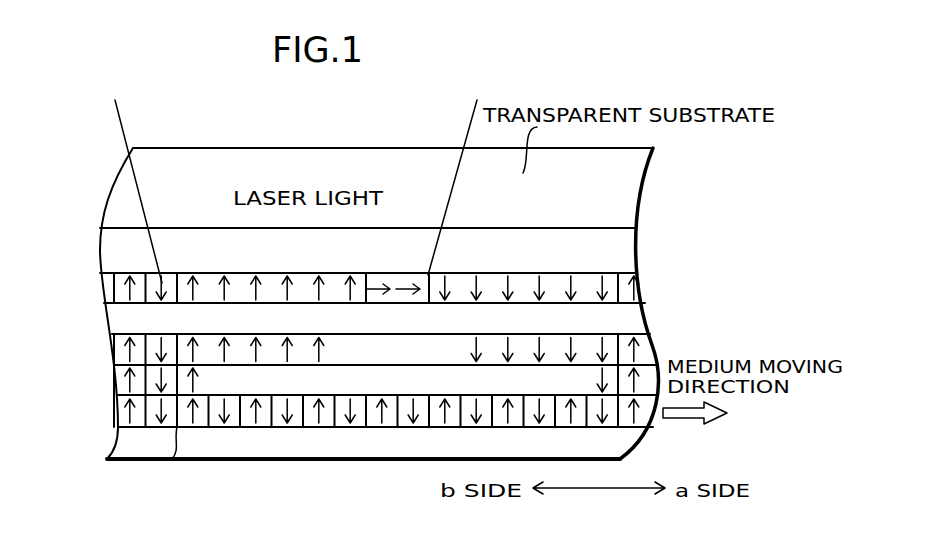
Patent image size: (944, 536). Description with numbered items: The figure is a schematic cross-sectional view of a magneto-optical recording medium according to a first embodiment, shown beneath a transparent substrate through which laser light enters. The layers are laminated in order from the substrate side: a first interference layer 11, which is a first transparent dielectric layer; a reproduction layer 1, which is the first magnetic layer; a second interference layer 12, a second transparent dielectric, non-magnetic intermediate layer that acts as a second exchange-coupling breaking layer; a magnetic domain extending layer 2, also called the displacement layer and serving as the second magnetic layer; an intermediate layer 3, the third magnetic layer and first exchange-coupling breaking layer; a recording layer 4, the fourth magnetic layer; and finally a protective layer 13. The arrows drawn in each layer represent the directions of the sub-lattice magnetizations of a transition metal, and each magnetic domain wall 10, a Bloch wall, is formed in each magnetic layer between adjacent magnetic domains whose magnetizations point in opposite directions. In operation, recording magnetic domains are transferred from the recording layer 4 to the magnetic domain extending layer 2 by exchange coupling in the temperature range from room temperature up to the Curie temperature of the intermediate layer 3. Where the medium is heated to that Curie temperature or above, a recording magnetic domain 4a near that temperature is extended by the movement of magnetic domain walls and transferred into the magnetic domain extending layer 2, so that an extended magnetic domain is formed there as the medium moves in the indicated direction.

The first interference layer 11 is at (103, 243).
The reproduction layer 1 is at (100, 280).
The second interference layer 12 is at (107, 320).
The magnetic domain extending layer 2 is at (112, 351).
The intermediate layer 3 is at (119, 386).
The recording layer 4 is at (121, 416).
The recording magnetic domain 4a is at (197, 428).
The protective layer 13 is at (118, 440).
The magnetic domain wall 10 is at (146, 427).